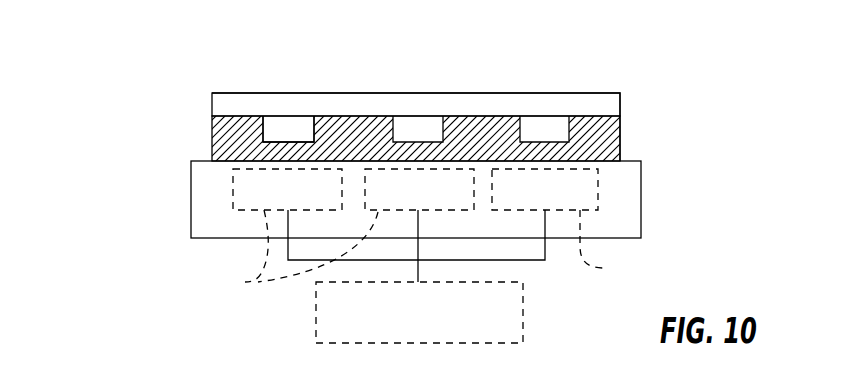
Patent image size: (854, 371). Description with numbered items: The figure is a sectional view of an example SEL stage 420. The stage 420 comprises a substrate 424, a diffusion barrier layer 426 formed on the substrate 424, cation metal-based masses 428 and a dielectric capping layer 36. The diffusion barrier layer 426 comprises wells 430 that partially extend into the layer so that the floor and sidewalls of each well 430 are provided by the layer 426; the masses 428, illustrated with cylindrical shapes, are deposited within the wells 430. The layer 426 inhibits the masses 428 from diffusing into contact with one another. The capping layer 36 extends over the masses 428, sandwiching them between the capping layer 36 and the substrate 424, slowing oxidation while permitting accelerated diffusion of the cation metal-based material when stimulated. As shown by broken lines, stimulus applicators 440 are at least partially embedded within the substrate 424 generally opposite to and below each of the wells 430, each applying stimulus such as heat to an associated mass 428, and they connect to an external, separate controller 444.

The SEL stage 420 is at (114, 144).
The capping layer 36 is at (620, 103).
The diffusion barrier layer 426 is at (212, 138).
The cation metal-based masses 428 is at (533, 123).
The wells 430 is at (268, 118).
The substrate 424 is at (191, 215).
The stimulus applicators 440 is at (426, 253).
The controller 444 is at (523, 298).